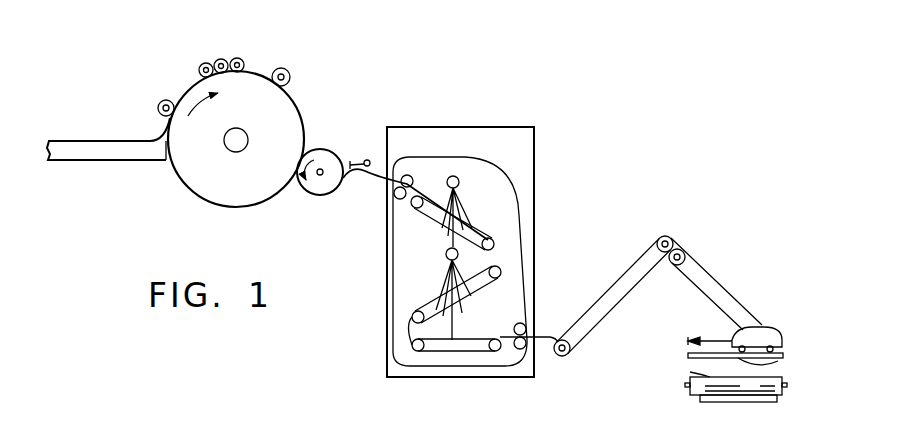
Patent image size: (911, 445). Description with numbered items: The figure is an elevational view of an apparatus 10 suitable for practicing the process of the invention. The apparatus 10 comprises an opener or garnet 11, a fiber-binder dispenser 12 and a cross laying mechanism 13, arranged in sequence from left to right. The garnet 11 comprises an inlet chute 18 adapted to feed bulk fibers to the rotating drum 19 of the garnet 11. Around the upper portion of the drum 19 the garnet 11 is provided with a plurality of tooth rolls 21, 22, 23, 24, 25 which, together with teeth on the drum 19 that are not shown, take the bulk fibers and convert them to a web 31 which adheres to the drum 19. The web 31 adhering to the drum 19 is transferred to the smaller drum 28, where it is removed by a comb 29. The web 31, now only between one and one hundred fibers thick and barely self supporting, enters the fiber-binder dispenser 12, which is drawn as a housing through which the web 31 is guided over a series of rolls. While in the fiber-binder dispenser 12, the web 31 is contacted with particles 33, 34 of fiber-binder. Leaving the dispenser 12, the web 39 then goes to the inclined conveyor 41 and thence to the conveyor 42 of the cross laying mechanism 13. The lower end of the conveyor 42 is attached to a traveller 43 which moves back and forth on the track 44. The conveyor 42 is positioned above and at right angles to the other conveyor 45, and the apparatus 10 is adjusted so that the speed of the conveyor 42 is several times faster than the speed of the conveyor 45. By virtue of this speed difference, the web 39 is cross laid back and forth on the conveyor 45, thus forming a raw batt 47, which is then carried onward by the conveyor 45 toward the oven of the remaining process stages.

The apparatus 10 is at (492, 63).
The opener or garnet 11 is at (267, 125).
The fiber-binder dispenser 12 is at (475, 212).
The cross laying mechanism 13 is at (737, 330).
The inlet chute 18 is at (80, 140).
The rotating drum 19 is at (287, 113).
The tooth roll 21 is at (158, 105).
The tooth roll 22 is at (201, 64).
The tooth roll 23 is at (221, 59).
The tooth roll 24 is at (239, 58).
The tooth roll 25 is at (286, 68).
The drum 28 is at (322, 149).
The comb 29 is at (356, 152).
The web 31 is at (361, 176).
The particles of fiber-binder 33 is at (465, 209).
The particles of fiber-binder 34 is at (468, 303).
The web 39 is at (548, 337).
The conveyor 41 is at (638, 262).
The conveyor 42 is at (700, 268).
The traveller 43 is at (783, 332).
The track 44 is at (688, 355).
The conveyor 45 is at (783, 377).
The raw batt 47 is at (693, 370).